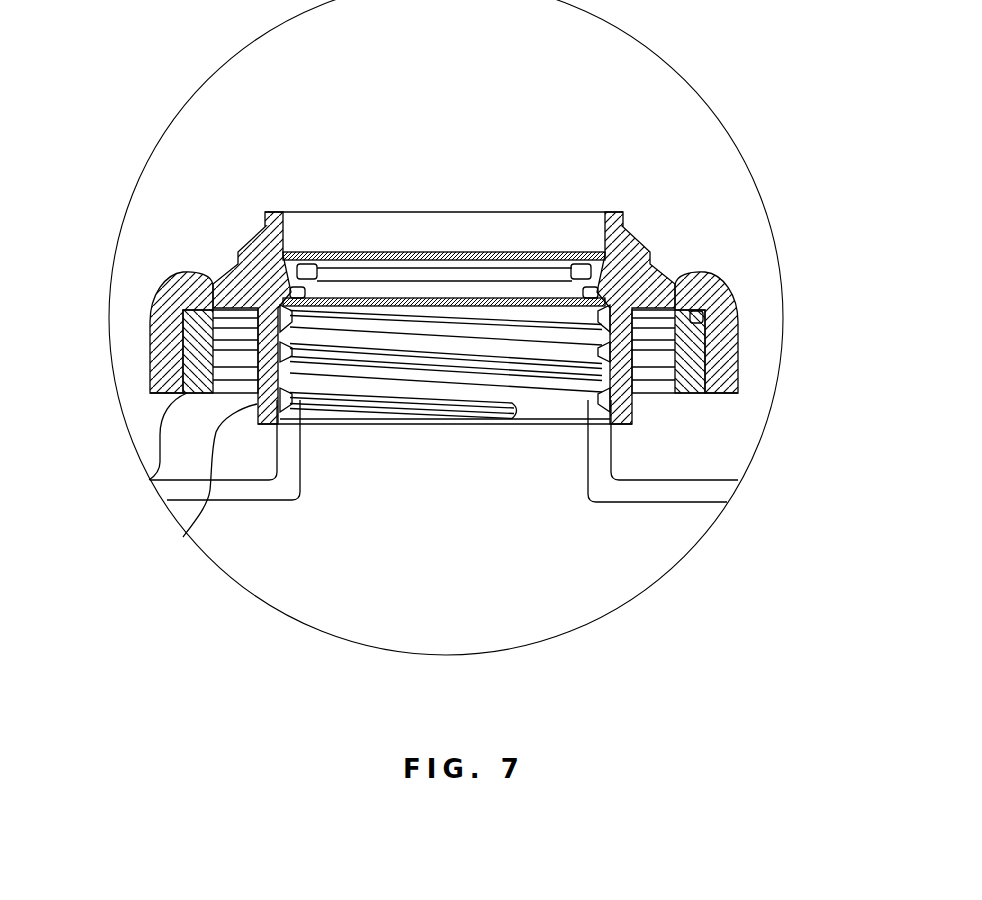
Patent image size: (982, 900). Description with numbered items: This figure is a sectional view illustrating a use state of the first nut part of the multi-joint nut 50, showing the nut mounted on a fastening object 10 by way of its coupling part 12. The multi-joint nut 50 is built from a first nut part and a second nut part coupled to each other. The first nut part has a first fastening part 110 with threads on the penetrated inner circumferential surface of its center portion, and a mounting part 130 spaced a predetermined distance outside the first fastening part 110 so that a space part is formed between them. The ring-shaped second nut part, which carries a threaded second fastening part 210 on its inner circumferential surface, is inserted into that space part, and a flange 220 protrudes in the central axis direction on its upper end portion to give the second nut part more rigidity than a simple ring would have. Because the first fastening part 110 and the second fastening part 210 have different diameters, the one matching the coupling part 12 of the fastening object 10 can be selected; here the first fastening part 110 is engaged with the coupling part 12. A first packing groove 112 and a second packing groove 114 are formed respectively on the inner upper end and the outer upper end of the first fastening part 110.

The fastening object 10 is at (633, 504).
The coupling part 12 is at (613, 442).
The multi-joint nut 50 is at (680, 197).
The first fastening part 110 is at (186, 522).
The first packing groove 112 is at (252, 232).
The second packing groove 114 is at (293, 255).
The mounting part 130 is at (738, 362).
The second fastening part 210 is at (150, 477).
The flange 220 is at (207, 283).